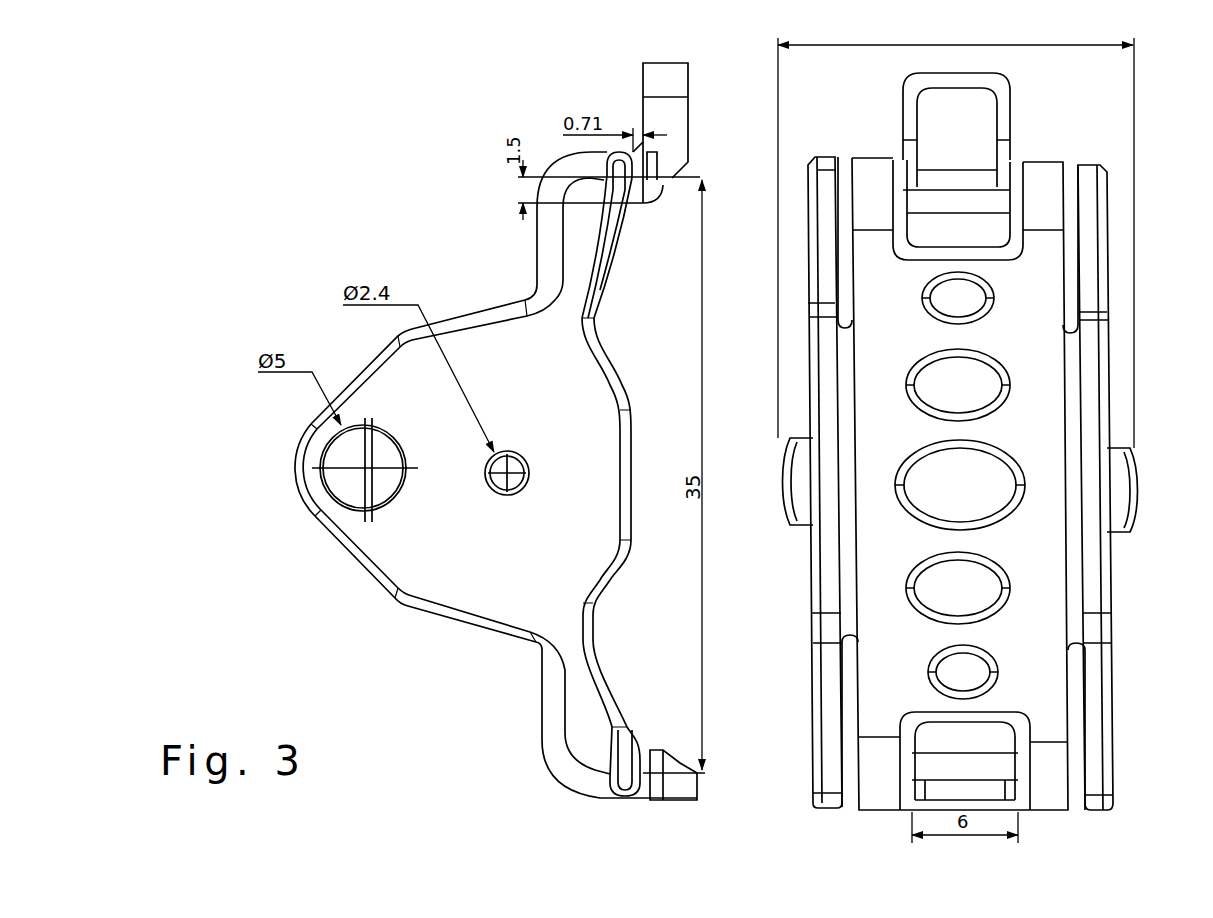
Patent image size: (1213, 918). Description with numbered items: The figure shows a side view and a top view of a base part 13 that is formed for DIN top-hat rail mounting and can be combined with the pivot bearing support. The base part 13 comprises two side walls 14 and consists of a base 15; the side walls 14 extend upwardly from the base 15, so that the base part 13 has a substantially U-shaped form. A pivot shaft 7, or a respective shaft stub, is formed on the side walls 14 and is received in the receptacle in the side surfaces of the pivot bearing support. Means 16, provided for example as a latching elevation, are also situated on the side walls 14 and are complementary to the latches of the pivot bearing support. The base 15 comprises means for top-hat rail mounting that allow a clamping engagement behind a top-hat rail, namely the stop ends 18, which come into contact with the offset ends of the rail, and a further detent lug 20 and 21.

The pivot shaft 7 is at (350, 495).
The base part 13 is at (470, 258).
The side walls 14 is at (453, 588).
The base 15 is at (878, 677).
The means complementary to the latches 16 is at (477, 386).
The stop ends 18 is at (633, 218).
The detent lug 20 is at (688, 192).
The detent lug 21 is at (700, 778).